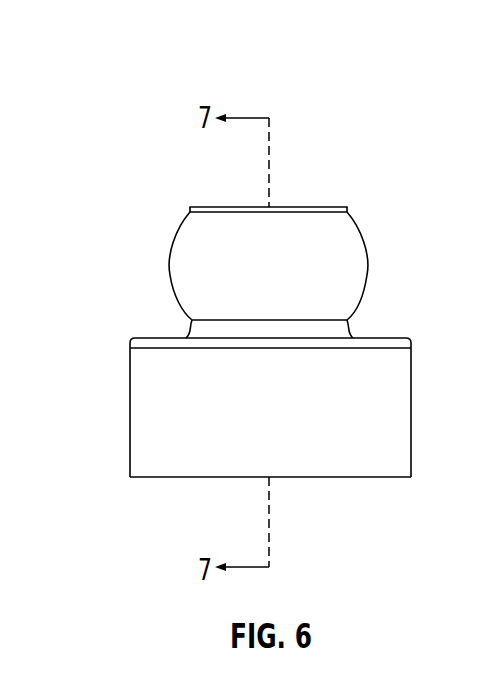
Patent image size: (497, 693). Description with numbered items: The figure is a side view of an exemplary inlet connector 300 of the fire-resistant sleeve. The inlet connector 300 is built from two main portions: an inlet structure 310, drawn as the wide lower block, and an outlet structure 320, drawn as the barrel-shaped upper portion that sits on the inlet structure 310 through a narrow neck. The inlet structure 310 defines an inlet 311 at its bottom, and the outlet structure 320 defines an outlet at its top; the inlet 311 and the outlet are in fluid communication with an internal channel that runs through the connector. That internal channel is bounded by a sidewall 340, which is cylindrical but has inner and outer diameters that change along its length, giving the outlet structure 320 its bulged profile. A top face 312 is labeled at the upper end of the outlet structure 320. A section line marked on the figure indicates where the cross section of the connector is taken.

The inlet connector 300 is at (128, 109).
The inlet structure 310 is at (121, 405).
The inlet 311 is at (190, 477).
The top surface of head 312 is at (312, 207).
The outlet structure 320 is at (161, 212).
The sidewall 340 is at (173, 276).